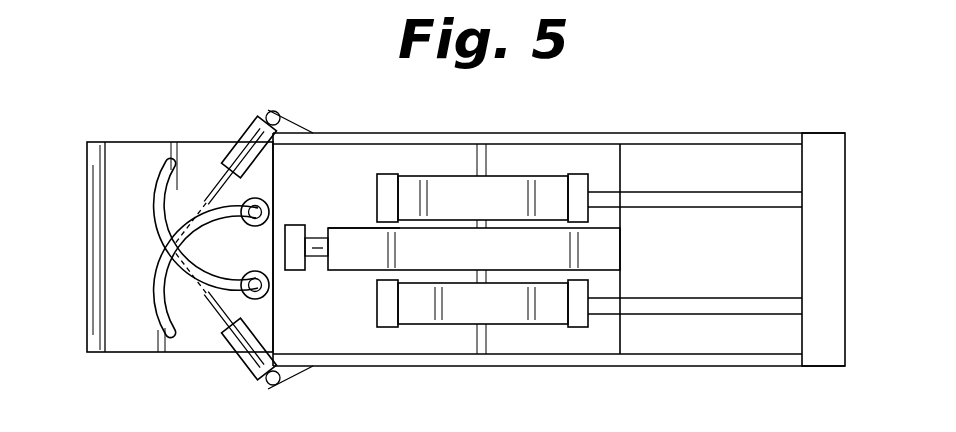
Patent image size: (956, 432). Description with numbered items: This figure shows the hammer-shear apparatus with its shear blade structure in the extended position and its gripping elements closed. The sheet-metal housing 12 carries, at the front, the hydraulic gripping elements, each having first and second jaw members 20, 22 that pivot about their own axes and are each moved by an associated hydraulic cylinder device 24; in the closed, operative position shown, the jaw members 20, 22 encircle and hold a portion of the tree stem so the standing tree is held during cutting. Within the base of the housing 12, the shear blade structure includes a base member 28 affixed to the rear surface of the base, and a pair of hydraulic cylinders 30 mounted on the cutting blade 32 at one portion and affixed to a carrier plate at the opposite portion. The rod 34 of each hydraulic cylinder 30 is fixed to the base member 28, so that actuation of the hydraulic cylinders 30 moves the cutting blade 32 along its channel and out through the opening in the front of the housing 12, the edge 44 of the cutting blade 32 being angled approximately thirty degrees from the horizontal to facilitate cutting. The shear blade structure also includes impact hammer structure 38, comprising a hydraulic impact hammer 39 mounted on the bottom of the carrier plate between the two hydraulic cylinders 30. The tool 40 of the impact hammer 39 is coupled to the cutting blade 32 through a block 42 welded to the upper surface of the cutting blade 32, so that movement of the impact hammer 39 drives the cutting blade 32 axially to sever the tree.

The housing 12 is at (580, 133).
The first jaw member 20 is at (214, 198).
The second jaw member 22 is at (222, 288).
The hydraulic cylinder device 24 is at (243, 134).
The base member 28 is at (835, 263).
The hydraulic cylinder 30 is at (500, 209).
The cutting blade 32 is at (125, 345).
The rod 34 is at (700, 191).
The impact hammer structure 38 is at (487, 261).
The hydraulic impact hammer 39 is at (350, 228).
The tool 40 is at (318, 257).
The block 42 is at (298, 225).
The edge 44 is at (87, 342).